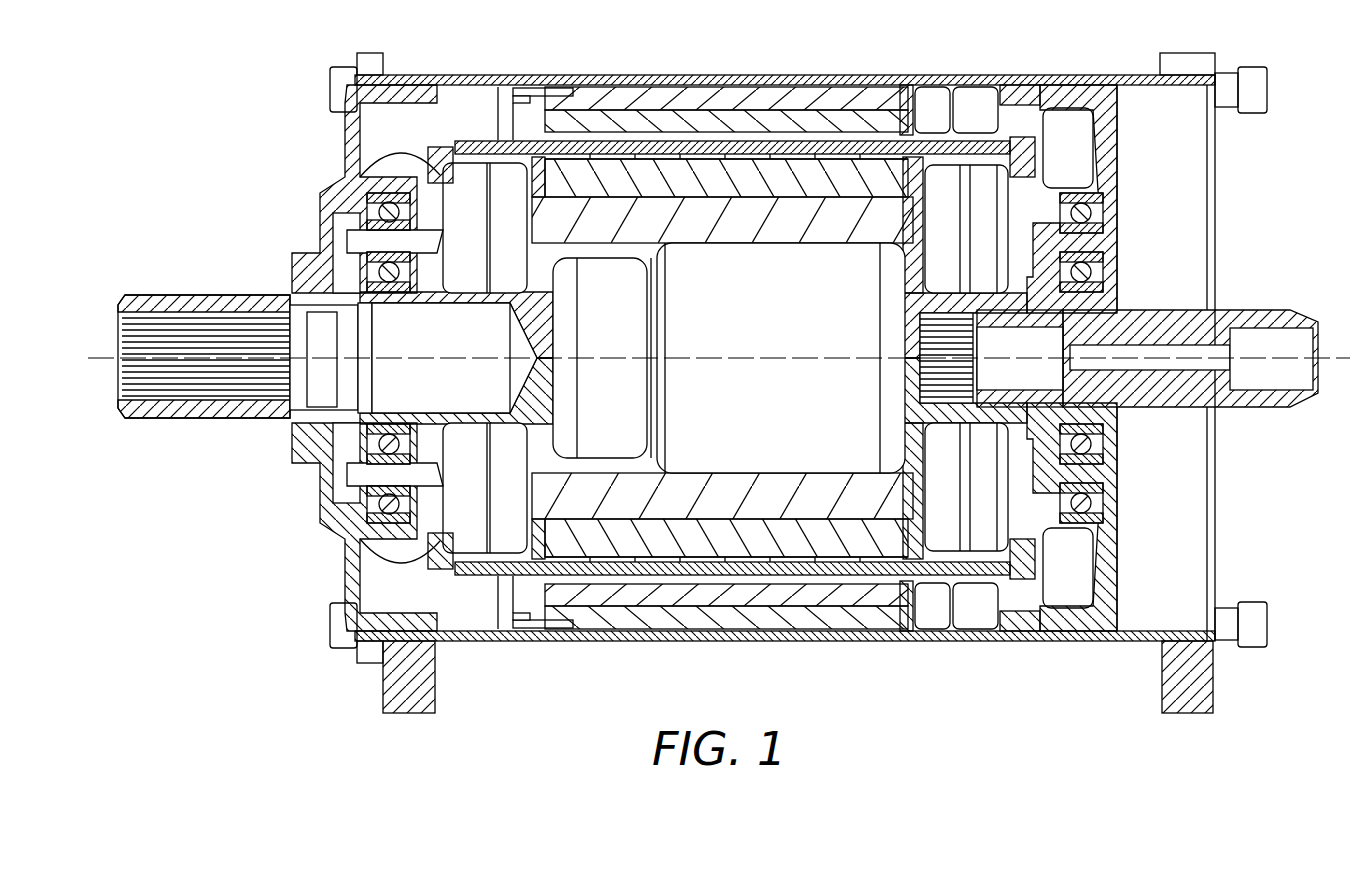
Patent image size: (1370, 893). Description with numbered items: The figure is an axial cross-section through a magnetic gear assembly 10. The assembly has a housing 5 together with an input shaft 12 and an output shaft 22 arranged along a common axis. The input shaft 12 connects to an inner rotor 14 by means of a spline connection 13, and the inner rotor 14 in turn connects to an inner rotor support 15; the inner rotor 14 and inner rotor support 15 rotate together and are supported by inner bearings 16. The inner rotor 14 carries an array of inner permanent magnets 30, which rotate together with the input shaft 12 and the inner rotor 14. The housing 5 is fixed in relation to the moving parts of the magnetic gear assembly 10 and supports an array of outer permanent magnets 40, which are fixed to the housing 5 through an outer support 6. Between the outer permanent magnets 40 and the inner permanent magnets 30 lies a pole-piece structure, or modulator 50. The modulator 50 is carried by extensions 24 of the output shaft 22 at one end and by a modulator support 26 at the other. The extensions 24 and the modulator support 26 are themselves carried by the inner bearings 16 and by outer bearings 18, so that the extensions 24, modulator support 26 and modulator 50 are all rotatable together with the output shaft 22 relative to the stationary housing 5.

The housing 5 is at (523, 83).
The outer support 6 is at (720, 102).
The magnetic gear assembly 10 is at (232, 668).
The input shaft 12 is at (1267, 390).
The spline connection 13 is at (903, 383).
The inner rotor 14 is at (780, 485).
The inner rotor support 15 is at (608, 465).
The inner bearings 16 is at (393, 275).
The outer bearings 18 is at (382, 212).
The output shaft 22 is at (178, 412).
The extensions 24 is at (438, 158).
The modulator support 26 is at (1017, 157).
The inner permanent magnets 30 is at (770, 185).
The outer permanent magnets 40 is at (642, 125).
The modulator 50 is at (962, 147).